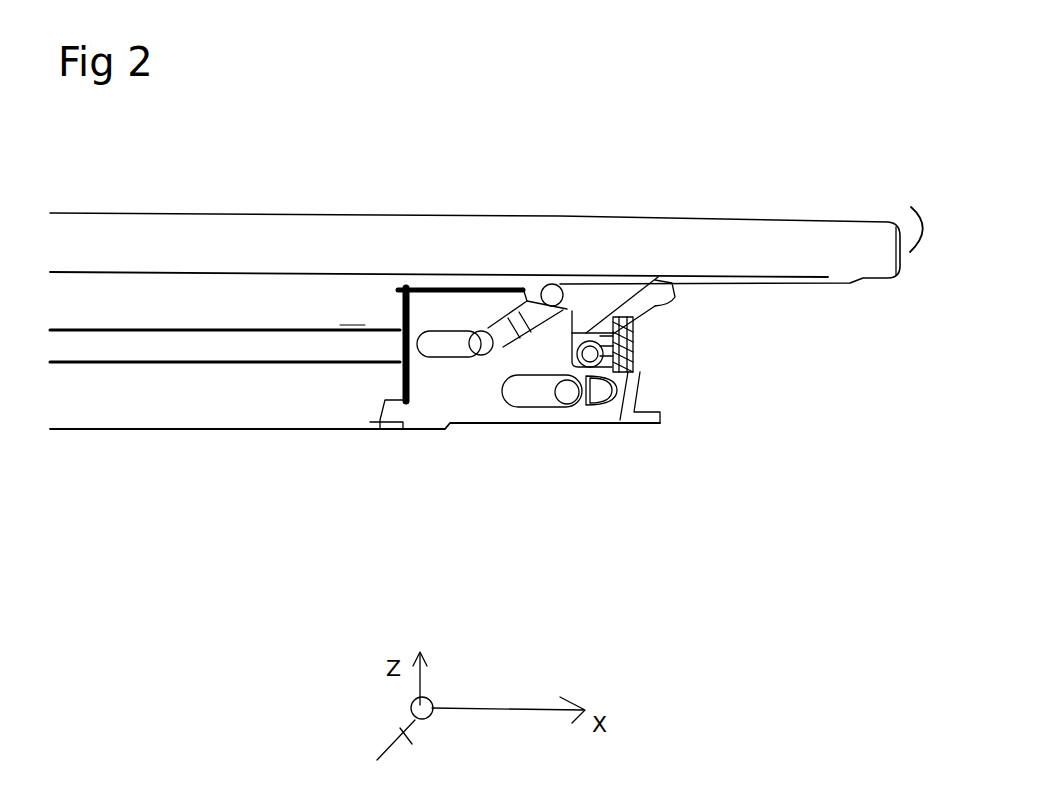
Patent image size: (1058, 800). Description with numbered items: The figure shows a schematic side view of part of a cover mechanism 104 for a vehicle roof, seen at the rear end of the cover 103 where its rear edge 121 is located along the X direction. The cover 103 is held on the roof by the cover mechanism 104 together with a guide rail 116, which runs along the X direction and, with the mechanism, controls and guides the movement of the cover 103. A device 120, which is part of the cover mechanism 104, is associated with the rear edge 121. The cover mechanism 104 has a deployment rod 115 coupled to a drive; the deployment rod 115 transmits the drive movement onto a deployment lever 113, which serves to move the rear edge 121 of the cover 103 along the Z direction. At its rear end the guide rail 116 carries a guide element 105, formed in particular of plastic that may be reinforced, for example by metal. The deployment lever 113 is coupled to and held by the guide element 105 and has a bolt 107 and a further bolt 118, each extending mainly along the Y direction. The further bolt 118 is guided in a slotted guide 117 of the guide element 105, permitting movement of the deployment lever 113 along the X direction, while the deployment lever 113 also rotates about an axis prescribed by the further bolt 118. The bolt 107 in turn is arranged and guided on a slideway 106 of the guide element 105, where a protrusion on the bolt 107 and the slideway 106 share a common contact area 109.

The cover 103 is at (588, 238).
The cover mechanism 104 is at (379, 183).
The guide element 105 is at (476, 402).
The slideway 106 is at (630, 400).
The bolt 107 is at (633, 351).
The contact area 109 is at (584, 400).
The deployment lever 113 is at (592, 340).
The deployment rod 115 is at (198, 343).
The guide rail 116 is at (175, 430).
The slotted guide 117 is at (589, 400).
The further bolt 118 is at (568, 395).
The device 120 is at (713, 327).
The rear edge 121 is at (916, 208).